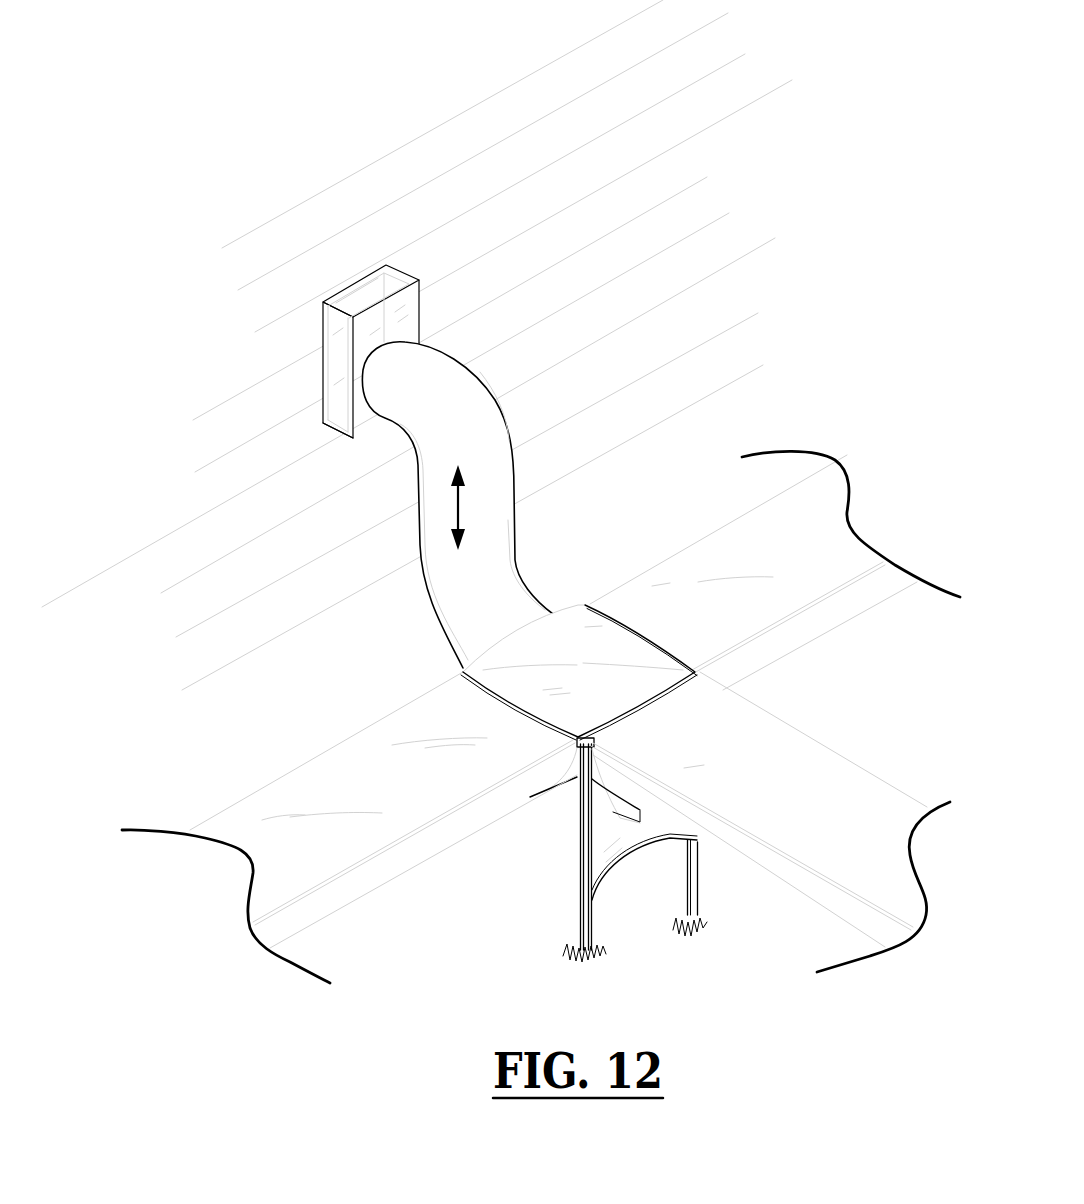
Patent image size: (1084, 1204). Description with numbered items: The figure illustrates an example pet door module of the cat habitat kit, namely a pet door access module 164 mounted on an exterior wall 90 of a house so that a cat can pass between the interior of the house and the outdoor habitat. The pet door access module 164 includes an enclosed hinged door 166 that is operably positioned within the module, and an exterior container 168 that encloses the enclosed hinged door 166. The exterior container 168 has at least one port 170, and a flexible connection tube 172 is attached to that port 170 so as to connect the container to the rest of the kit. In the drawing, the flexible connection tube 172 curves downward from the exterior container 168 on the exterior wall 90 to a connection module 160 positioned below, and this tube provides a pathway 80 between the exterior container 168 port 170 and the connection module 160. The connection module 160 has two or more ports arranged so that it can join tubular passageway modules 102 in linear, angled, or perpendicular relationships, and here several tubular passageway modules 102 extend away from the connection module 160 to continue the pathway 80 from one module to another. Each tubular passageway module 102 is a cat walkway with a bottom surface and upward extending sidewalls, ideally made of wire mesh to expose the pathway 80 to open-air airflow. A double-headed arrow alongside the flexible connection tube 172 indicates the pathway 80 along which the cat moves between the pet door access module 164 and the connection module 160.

The cat navigable pathway 80 is at (461, 508).
The exterior wall 90 is at (417, 345).
The tubular passageway module 102 is at (675, 535).
The connection module 160 is at (463, 667).
The pet door access module 164 is at (404, 428).
The enclosed hinged door 166 is at (342, 284).
The exterior container 168 is at (323, 372).
The port 170 is at (372, 410).
The flexible connection tube 172 is at (483, 391).